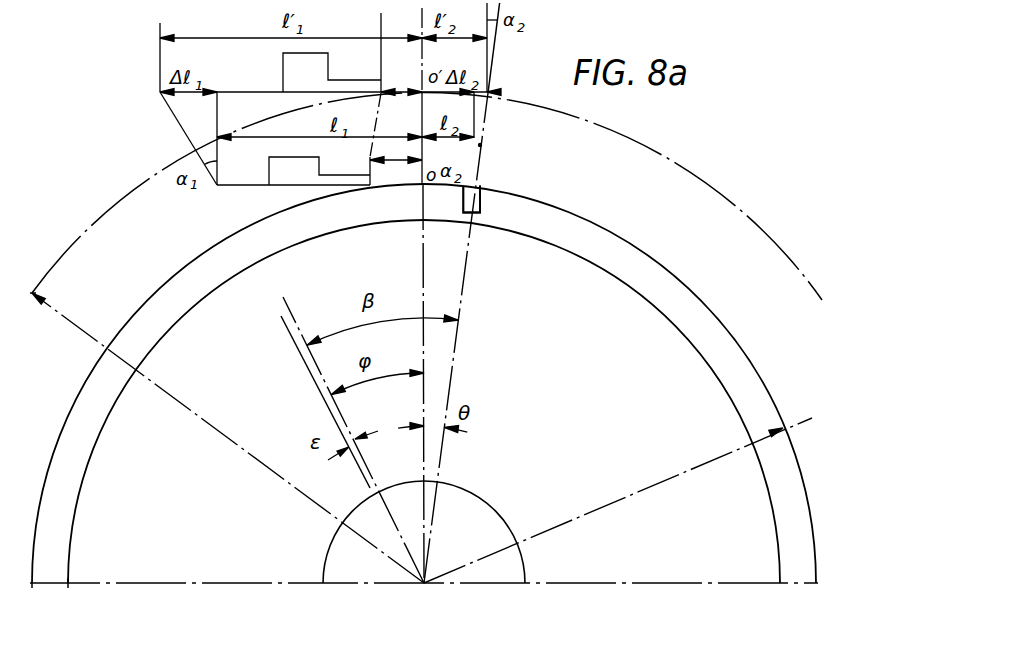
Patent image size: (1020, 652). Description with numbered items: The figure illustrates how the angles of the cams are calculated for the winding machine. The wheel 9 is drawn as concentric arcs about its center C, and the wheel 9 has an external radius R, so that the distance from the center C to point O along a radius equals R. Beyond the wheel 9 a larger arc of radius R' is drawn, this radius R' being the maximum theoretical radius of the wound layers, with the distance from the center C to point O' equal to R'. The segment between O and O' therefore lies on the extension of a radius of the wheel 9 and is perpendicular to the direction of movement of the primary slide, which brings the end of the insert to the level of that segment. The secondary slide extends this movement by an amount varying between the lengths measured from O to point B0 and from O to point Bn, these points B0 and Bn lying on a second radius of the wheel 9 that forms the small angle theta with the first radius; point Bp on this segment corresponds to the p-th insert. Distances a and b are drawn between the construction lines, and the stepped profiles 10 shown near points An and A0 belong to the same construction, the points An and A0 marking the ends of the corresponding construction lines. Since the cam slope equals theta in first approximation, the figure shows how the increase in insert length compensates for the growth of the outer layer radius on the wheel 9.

The wheel 9 is at (621, 255).
The stepped segment 10 is at (283, 66).
The center of wheel C is at (424, 307).
The external radius of wheel R is at (618, 500).
The maximum theoretical radius of wound layers R' is at (426, 338).
The end point An is at (274, 104).
The point A0 is at (312, 154).
The point Bn is at (472, 50).
The point Bp is at (467, 125).
The point Bo B0 is at (486, 192).
The distance a is at (396, 161).
The distance b is at (396, 85).